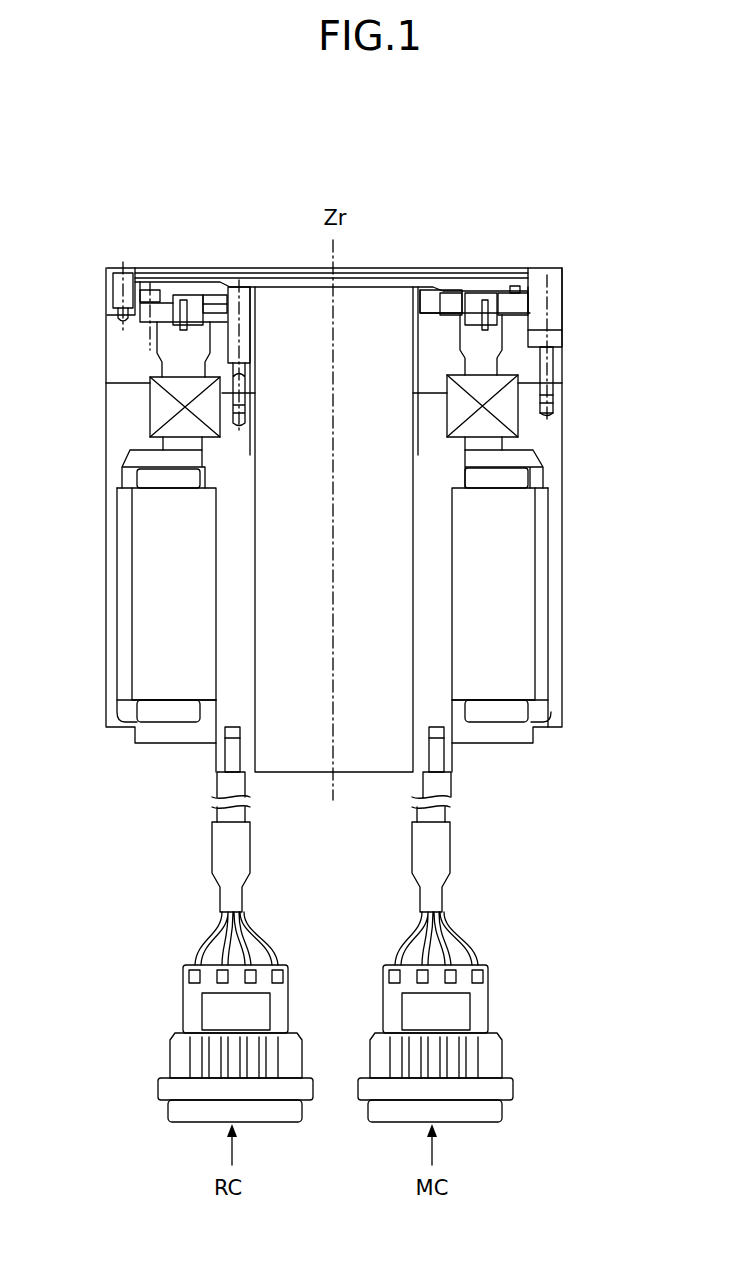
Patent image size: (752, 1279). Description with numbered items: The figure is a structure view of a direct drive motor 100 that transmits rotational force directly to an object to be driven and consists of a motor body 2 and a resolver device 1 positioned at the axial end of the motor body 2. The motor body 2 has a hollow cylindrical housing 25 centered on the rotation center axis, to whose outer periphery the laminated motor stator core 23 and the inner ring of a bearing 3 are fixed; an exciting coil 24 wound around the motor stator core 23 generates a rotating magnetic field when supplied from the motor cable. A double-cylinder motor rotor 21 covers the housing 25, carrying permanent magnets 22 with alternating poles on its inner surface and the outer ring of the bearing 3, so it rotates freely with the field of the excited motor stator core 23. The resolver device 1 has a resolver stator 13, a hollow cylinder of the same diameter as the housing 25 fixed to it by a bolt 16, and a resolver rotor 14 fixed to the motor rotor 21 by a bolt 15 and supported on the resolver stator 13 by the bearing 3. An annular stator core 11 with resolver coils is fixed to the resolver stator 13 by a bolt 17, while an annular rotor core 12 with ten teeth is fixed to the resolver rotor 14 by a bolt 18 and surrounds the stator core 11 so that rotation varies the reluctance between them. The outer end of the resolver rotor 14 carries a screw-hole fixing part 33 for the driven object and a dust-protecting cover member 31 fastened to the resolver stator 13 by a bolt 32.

The motor 100 is at (303, 184).
The resolver device 1 is at (576, 296).
The motor body 2 is at (571, 498).
The bearing 3 is at (528, 427).
The stator core 11 is at (474, 283).
The rotor core 12 is at (502, 283).
The resolver stator 13 is at (430, 318).
The resolver rotor 14 is at (557, 368).
The bolt 15 is at (563, 300).
The bolt 16 is at (223, 295).
The bolt 17 is at (452, 298).
The bolt 18 is at (524, 286).
The motor rotor 21 is at (557, 674).
The magnet 22 is at (546, 690).
The motor stator core 23 is at (488, 690).
The exciting coil 24 is at (508, 714).
The housing 25 is at (430, 680).
The cover member 31 is at (183, 266).
The bolt 32 is at (233, 276).
The fixing part 33 is at (104, 277).